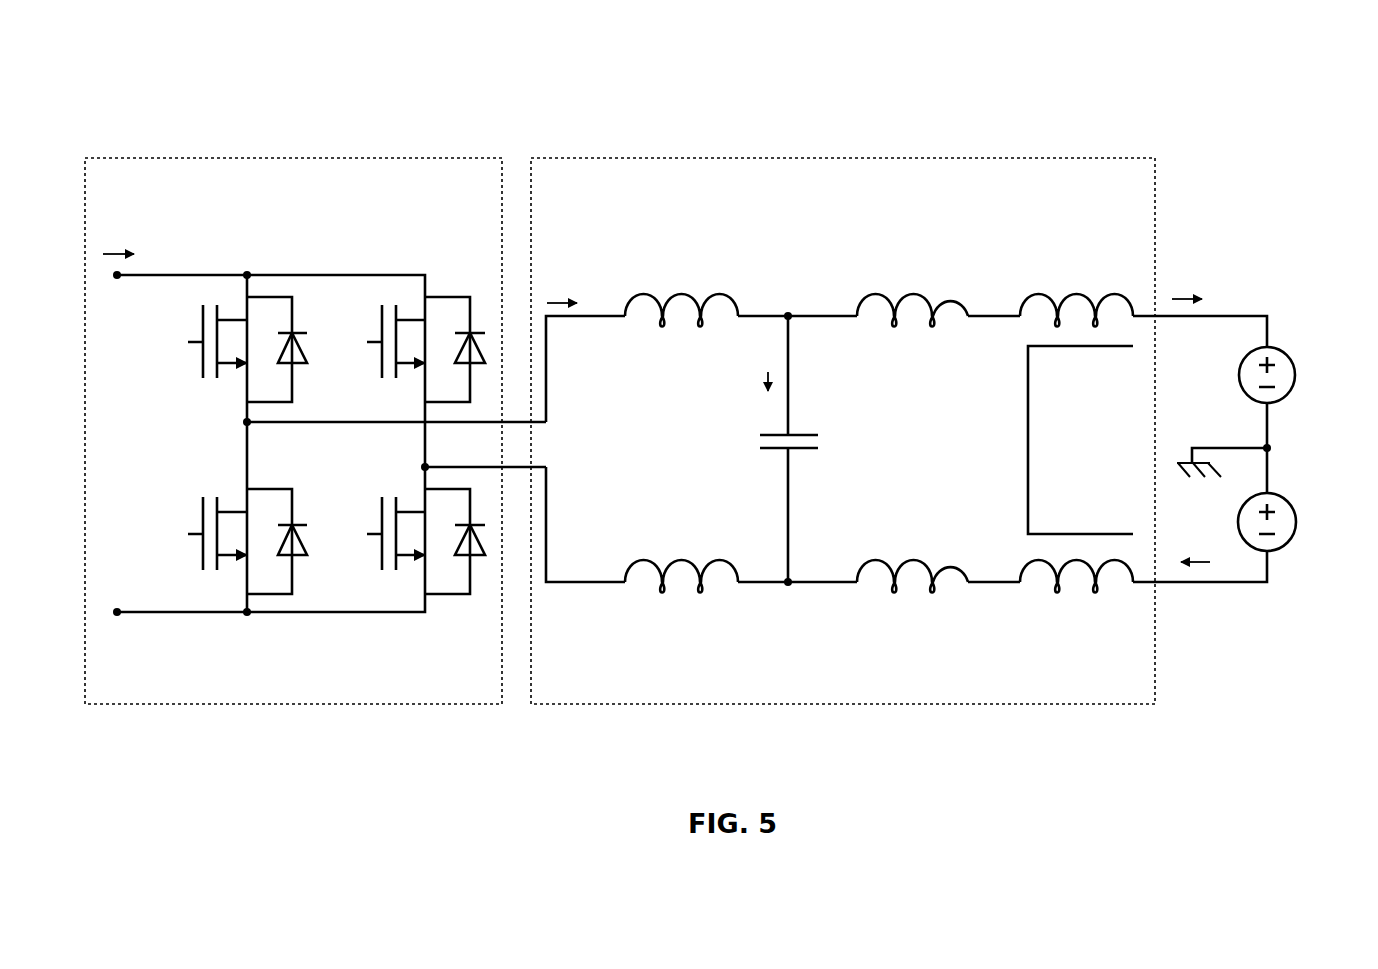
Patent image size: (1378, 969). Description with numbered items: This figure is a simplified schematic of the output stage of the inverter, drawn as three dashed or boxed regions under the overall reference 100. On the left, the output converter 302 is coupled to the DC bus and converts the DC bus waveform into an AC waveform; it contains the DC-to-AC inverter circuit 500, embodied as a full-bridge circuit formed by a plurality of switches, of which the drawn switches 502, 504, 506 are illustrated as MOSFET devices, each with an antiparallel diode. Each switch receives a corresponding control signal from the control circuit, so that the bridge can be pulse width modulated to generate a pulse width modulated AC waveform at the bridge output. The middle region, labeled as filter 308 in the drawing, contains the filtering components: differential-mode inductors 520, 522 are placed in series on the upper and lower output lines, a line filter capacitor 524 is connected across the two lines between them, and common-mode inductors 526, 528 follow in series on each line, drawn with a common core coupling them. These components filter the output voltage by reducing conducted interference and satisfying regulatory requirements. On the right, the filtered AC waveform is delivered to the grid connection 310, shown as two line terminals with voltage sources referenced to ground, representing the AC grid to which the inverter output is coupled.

The power conversion system 100 is at (1096, 77).
The output converter 302 is at (292, 158).
The input filter 308 is at (840, 158).
The output filter 310 is at (1320, 286).
The DC-to-AC inverter circuit 500 is at (376, 242).
The switch 502 is at (190, 352).
The switch 504 is at (192, 544).
The switch 506 is at (370, 357).
The differential-mode inductor 520 is at (740, 289).
The differential-mode inductor 522 is at (728, 549).
The line filter capacitor 524 is at (833, 421).
The common-mode inductor 526 is at (979, 287).
The common-mode inductor 528 is at (969, 551).